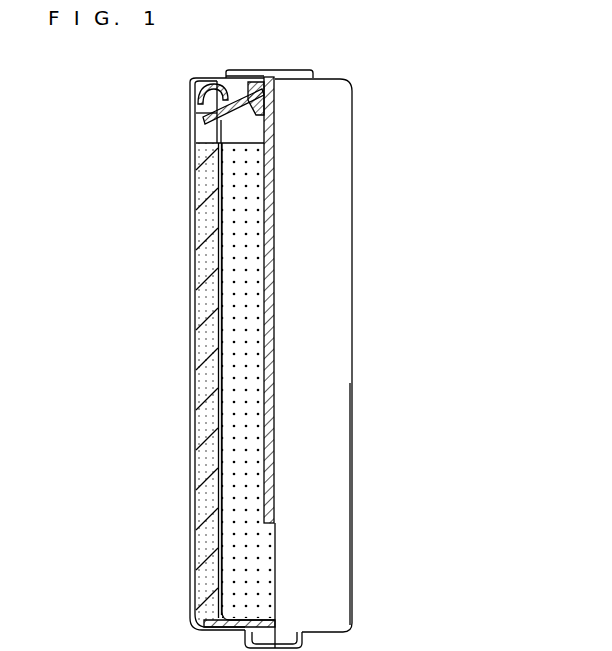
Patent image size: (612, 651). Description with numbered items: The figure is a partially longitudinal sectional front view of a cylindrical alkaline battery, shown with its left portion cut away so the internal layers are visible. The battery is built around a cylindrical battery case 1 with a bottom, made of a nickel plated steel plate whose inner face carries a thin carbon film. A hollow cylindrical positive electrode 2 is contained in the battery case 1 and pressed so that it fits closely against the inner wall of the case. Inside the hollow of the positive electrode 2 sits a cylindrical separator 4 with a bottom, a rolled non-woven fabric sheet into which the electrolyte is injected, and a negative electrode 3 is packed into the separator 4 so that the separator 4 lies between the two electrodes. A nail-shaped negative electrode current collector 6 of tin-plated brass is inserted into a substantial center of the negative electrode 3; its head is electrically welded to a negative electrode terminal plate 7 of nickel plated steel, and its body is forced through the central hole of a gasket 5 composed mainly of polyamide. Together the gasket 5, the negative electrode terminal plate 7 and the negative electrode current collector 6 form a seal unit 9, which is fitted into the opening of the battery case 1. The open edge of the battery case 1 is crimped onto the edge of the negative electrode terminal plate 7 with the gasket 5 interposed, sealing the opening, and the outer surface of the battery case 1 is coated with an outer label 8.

The battery case 1 is at (195, 372).
The positive electrode 2 is at (200, 540).
The negative electrode 3 is at (243, 305).
The separator 4 is at (220, 425).
The gasket 5 is at (200, 113).
The negative electrode current collector 6 is at (265, 203).
The negative electrode terminal plate 7 is at (233, 73).
The outer label 8 is at (193, 590).
The seal unit 9 is at (153, 58).